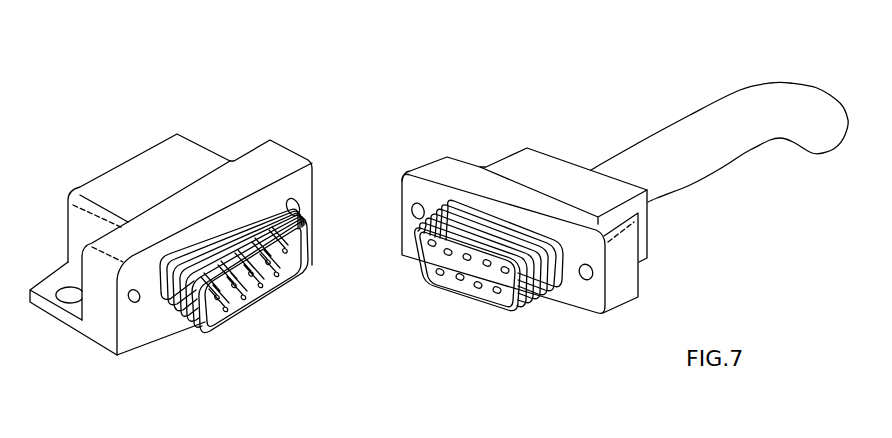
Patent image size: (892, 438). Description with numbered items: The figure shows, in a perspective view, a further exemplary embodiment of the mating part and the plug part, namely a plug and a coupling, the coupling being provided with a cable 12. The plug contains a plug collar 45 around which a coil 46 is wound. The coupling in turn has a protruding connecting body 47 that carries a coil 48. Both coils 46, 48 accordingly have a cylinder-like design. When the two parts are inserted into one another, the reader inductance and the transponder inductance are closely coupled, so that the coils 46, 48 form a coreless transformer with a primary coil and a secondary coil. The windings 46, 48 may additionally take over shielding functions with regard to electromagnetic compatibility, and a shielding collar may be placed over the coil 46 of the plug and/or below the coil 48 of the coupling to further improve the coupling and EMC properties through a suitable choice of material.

The cable 12 is at (670, 152).
The plug collar 45 is at (265, 298).
The coil 46 is at (181, 327).
The connecting body 47 is at (497, 303).
The coil 48 is at (537, 308).